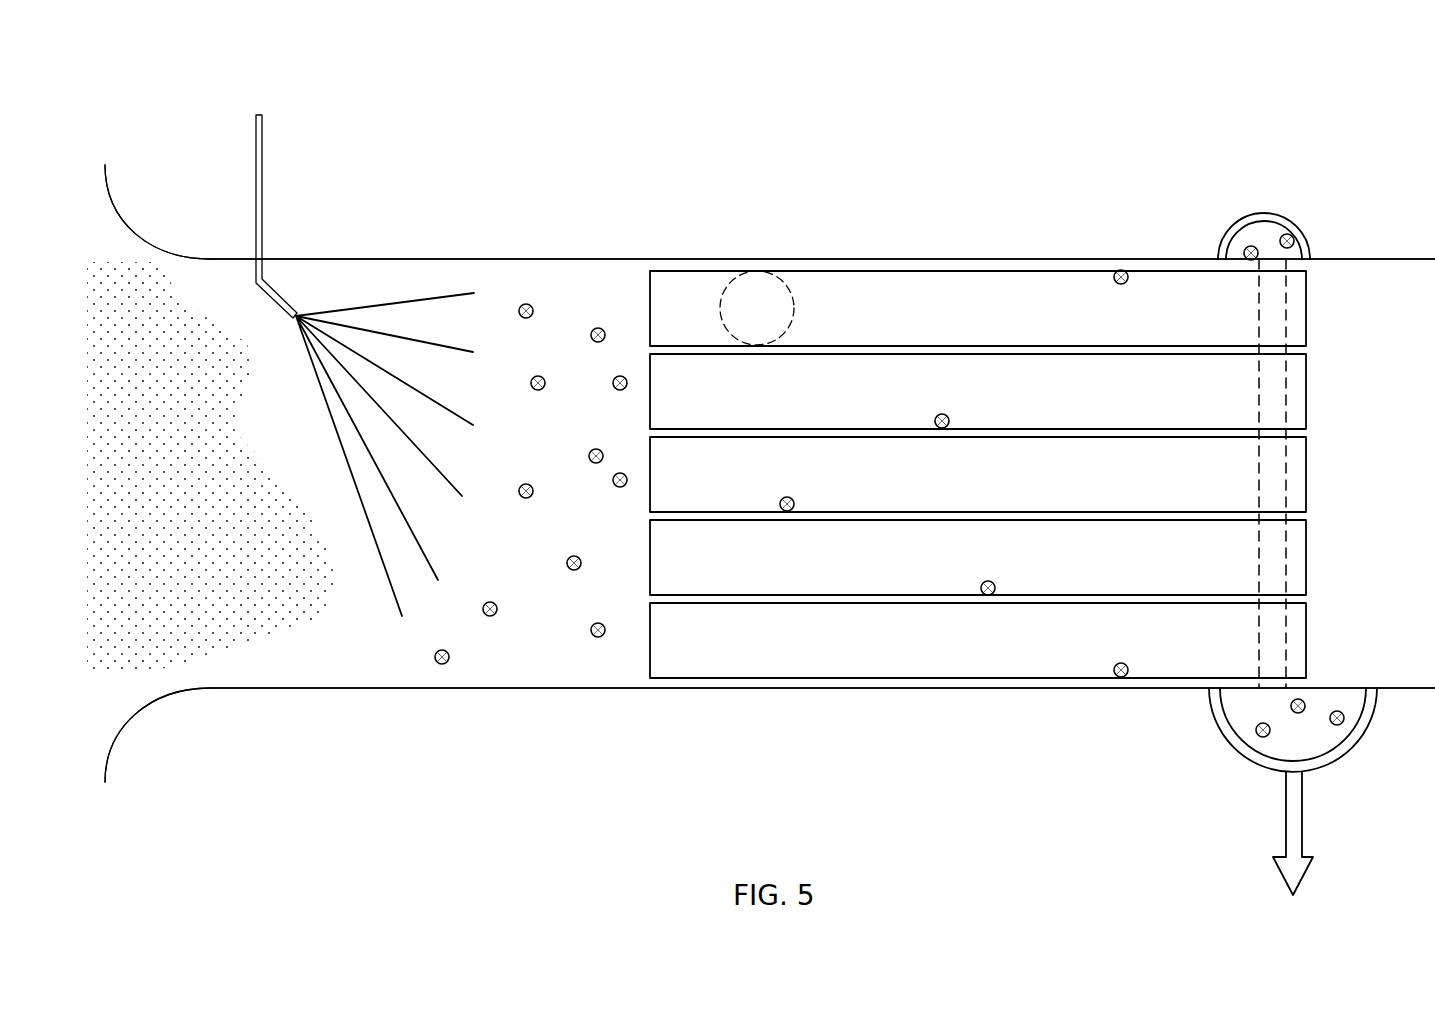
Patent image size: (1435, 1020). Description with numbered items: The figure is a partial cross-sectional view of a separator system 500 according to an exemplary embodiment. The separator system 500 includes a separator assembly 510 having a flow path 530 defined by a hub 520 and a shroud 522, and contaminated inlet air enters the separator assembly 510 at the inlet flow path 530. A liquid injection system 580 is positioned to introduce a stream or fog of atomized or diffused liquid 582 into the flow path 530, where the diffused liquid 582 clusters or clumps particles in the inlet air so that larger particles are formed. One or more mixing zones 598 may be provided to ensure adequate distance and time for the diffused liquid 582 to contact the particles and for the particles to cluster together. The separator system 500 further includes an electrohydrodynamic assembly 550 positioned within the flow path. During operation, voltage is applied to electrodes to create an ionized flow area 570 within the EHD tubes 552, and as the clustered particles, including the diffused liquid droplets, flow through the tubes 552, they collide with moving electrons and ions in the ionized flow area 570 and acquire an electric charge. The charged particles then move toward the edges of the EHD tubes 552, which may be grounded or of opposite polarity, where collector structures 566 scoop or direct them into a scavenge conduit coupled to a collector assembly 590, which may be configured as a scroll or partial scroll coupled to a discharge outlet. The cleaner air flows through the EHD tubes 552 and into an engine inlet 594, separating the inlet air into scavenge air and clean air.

The separator system 500 is at (770, 396).
The separator assembly 510 is at (306, 459).
The hub 520 is at (562, 688).
The shroud 522 is at (552, 259).
The flow path 530 is at (259, 440).
The electrohydrodynamic (EHD) assembly 550 is at (978, 559).
The EHD tubes 552 is at (738, 680).
The collector structures 566 is at (1288, 328).
The ionized flow area 570 is at (933, 285).
The liquid injection system 580 is at (262, 198).
The diffused liquid 582 is at (437, 294).
The collector assembly 590 is at (1270, 213).
The engine inlet 594 is at (1434, 419).
The mixing zones 598 is at (422, 593).